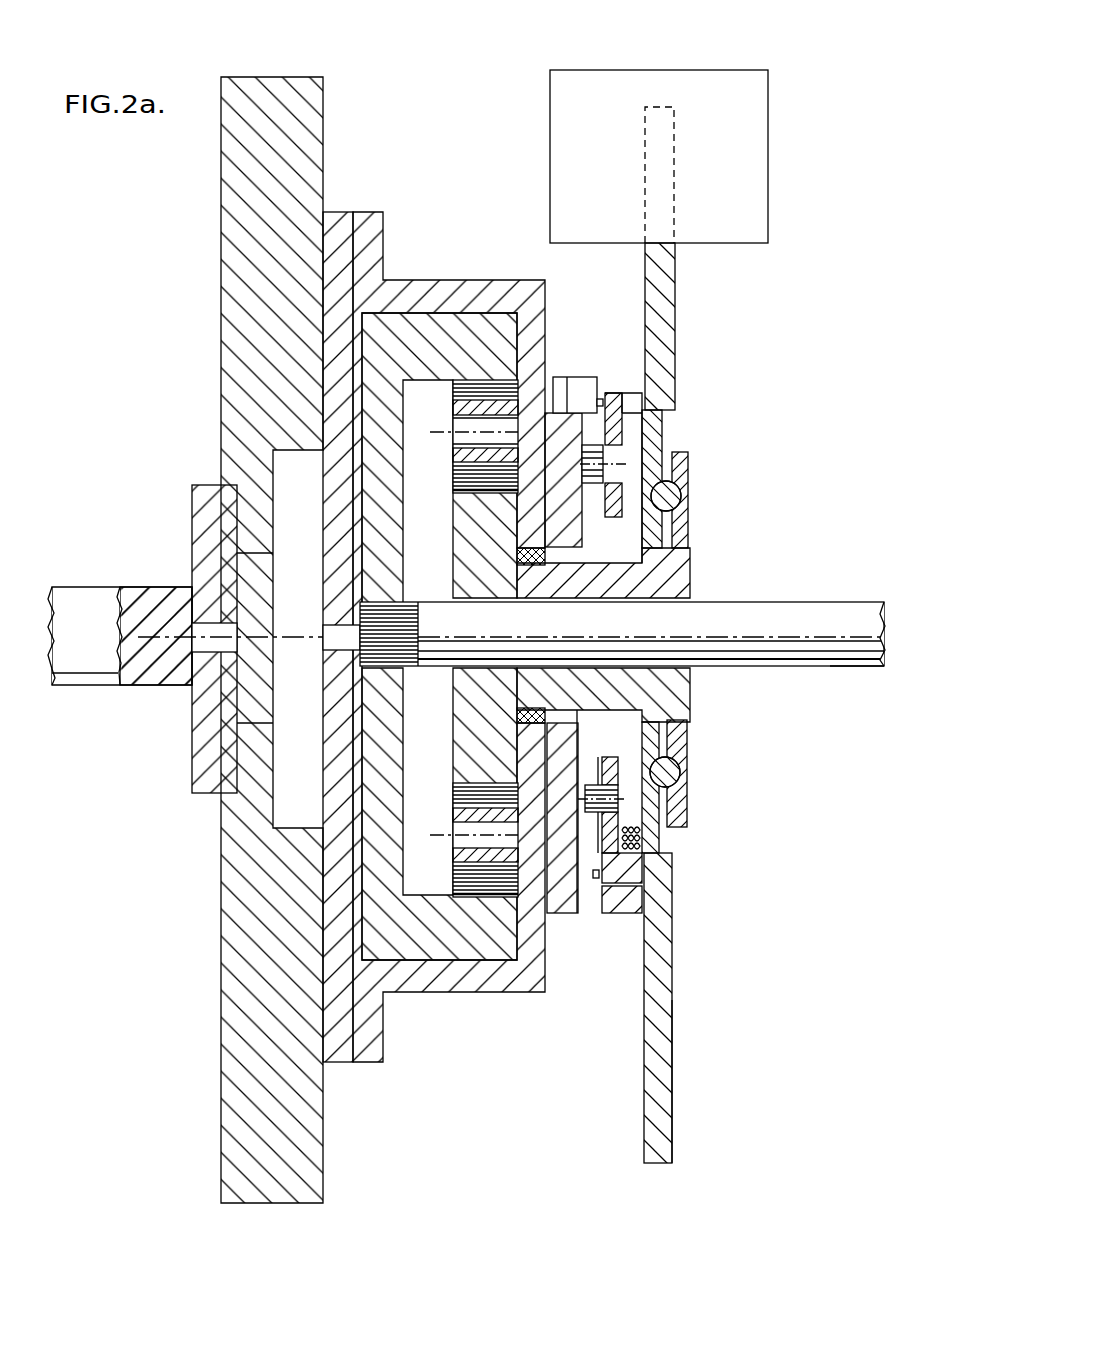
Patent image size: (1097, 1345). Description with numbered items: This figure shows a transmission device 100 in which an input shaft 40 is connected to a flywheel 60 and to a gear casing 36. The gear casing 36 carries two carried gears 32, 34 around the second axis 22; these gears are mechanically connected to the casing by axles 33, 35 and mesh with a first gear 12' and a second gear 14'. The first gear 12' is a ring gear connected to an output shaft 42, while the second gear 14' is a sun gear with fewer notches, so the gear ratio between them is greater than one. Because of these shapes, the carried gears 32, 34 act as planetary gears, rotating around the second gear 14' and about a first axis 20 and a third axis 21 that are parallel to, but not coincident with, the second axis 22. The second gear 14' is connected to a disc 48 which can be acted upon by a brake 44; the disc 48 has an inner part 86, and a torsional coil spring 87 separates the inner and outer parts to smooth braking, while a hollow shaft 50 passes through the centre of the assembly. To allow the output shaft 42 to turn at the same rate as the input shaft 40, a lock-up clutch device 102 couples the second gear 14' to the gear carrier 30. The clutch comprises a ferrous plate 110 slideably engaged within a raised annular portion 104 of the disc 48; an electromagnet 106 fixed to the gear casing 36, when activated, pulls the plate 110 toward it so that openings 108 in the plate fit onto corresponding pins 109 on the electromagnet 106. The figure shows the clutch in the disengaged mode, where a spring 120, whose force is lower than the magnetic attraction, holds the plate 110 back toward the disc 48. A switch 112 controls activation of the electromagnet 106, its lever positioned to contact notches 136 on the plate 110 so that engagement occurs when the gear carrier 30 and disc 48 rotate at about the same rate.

The flywheel 60 is at (181, 223).
The input shaft 40 is at (162, 692).
The gear casing 36 is at (467, 258).
The first gear 12' is at (439, 401).
The gear carrier 30 is at (437, 1035).
The carried gear 32 is at (500, 386).
The axle 33 is at (461, 422).
The first axis 20 is at (437, 435).
The second gear 14' is at (463, 501).
The carried gear 34 is at (488, 885).
The axle 35 is at (459, 821).
The third axis 21 is at (437, 830).
The second axis 22 is at (847, 626).
The output shaft 42 is at (831, 670).
The brake 44 is at (727, 66).
The device 100 is at (828, 243).
The inner part 86 is at (697, 581).
The torsional coil spring 87 is at (704, 768).
The switch 112 is at (590, 374).
The notches 136 is at (616, 390).
The pins 109 is at (608, 460).
The openings 108 is at (620, 470).
The hollow shaft 50 is at (630, 712).
The spring 120 is at (662, 836).
The plate 110 is at (632, 873).
The raised annular portion 104 is at (627, 898).
The electromagnet 106 is at (558, 923).
The lock-up clutch device 102 is at (612, 1102).
The disc 48 is at (688, 1090).